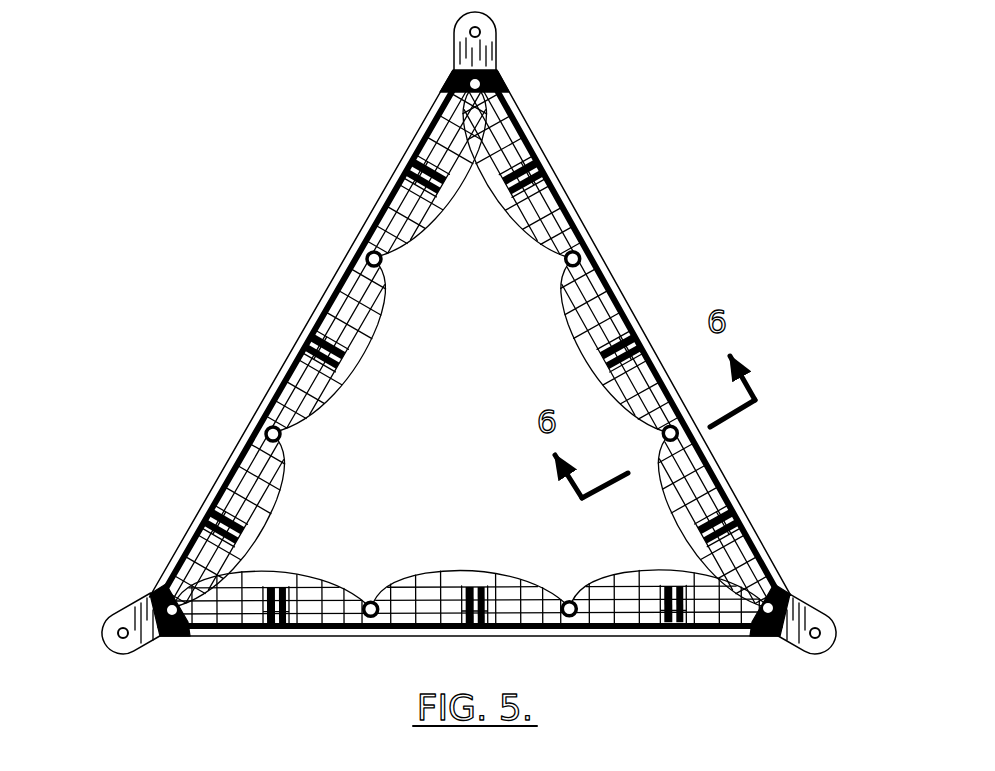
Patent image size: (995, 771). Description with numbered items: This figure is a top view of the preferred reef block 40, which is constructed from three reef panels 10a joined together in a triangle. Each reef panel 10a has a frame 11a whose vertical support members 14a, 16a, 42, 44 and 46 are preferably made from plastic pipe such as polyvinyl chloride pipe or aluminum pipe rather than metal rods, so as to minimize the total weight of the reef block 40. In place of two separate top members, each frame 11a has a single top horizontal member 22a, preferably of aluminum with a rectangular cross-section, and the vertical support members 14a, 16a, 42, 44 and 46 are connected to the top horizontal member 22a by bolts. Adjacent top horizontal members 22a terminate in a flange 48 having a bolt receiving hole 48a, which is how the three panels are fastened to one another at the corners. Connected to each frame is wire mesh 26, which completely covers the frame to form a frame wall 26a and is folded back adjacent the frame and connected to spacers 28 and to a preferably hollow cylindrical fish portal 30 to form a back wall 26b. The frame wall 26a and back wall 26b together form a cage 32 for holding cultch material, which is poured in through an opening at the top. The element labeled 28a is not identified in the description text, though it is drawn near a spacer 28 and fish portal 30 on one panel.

The reef panel 10a is at (258, 404).
The frame 11a is at (736, 486).
The vertical support member 14a is at (283, 442).
The vertical support member 16a is at (382, 266).
The top horizontal member 22a is at (588, 243).
The wire mesh 26 is at (381, 310).
The frame wall 26a is at (366, 243).
The back wall 26b is at (438, 229).
The spacer 28 is at (414, 158).
The rib 28a is at (316, 353).
The fish portal 30 is at (324, 341).
The cage 32 is at (452, 567).
The reef block 40 is at (280, 318).
The vertical support member 42 is at (776, 586).
The vertical support member 44 is at (498, 82).
The vertical support member 46 is at (158, 592).
The flange 48 is at (495, 45).
The bolt receiving hole 48a is at (490, 30).